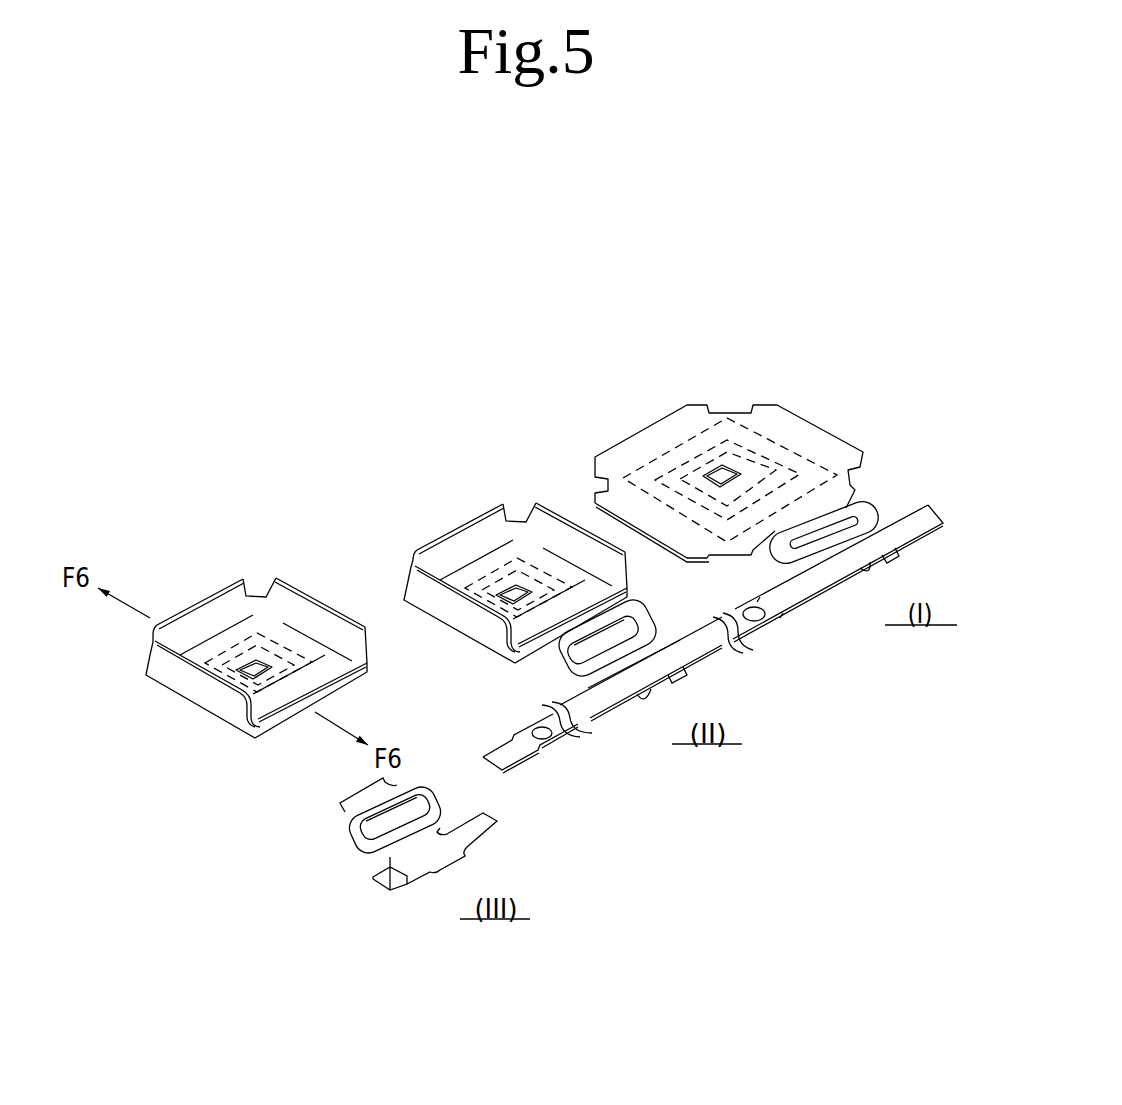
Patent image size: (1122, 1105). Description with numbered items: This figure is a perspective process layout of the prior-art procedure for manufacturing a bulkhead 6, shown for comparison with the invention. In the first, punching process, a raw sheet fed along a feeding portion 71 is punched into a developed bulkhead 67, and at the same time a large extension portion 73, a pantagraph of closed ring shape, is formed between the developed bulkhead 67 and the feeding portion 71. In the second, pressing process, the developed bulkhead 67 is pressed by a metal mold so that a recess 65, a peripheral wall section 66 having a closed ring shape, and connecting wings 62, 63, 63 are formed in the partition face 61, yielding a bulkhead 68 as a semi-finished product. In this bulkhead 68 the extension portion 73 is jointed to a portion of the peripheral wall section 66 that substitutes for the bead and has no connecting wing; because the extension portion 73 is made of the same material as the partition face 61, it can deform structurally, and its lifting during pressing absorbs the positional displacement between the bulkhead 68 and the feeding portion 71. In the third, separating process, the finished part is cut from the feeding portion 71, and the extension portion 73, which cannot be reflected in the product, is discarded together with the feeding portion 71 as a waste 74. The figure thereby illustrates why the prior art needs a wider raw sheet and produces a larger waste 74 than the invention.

The bulkhead 6 is at (245, 580).
The partition face 61 is at (240, 633).
The connecting wing 62 is at (215, 603).
The connecting wing 63 is at (316, 615).
The recess 65 is at (230, 678).
The peripheral wall section 66 is at (335, 687).
The developed bulkhead 67 is at (662, 440).
The bulkhead for a semi-finished product 68 is at (478, 547).
The feeding portion 71 is at (790, 602).
The extension portion 73 is at (585, 668).
The waste 74 is at (400, 877).